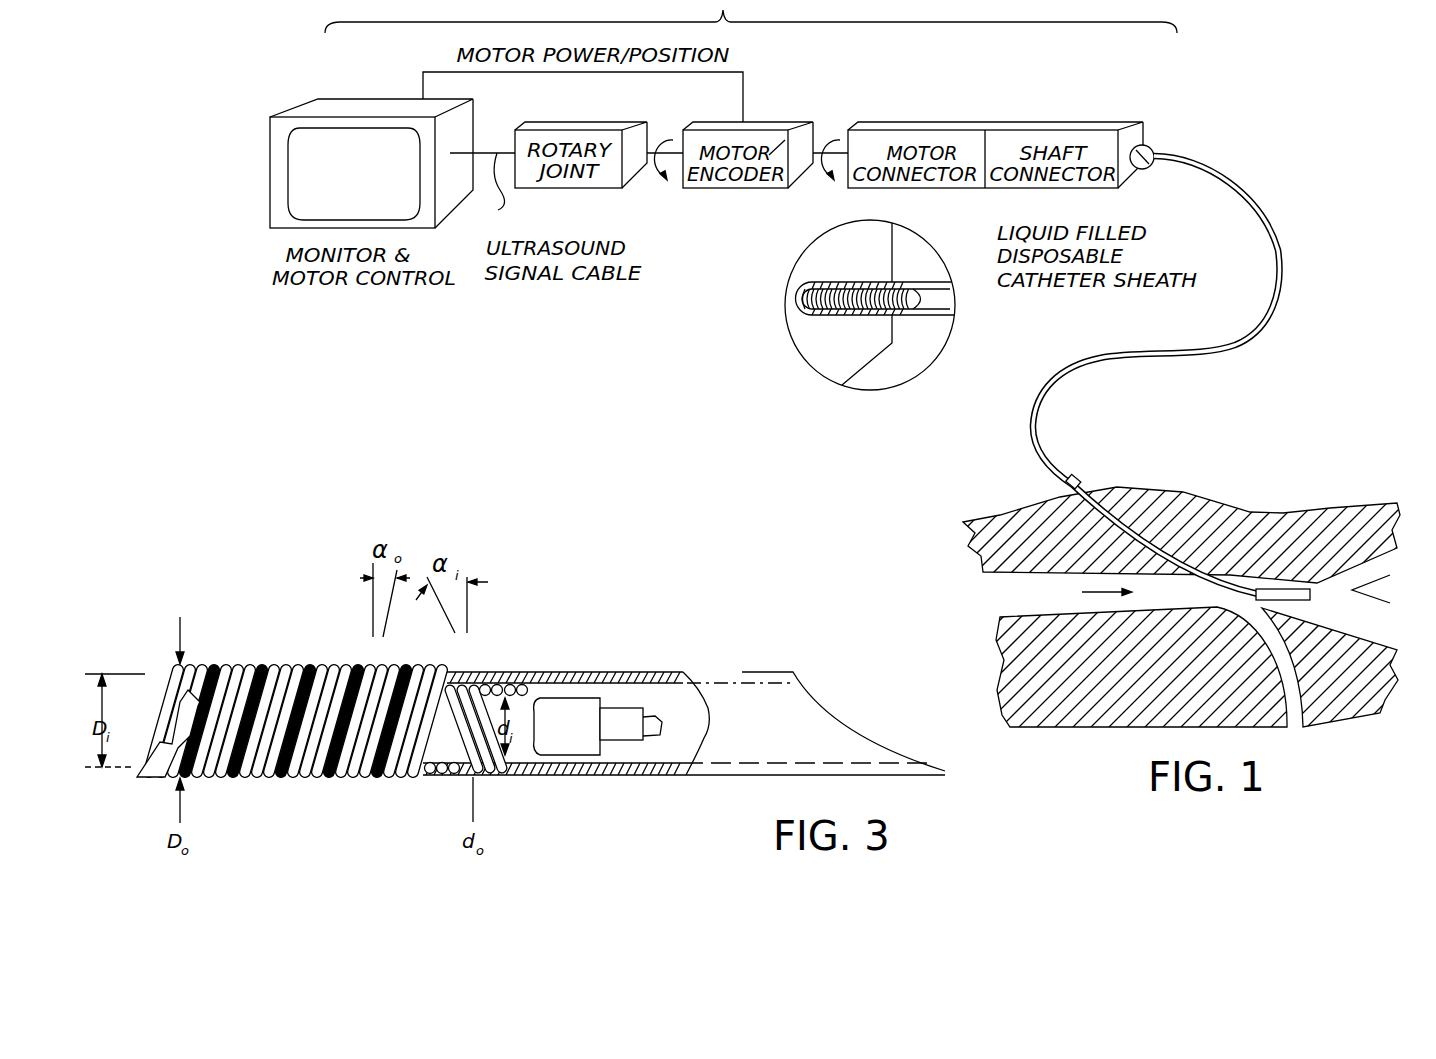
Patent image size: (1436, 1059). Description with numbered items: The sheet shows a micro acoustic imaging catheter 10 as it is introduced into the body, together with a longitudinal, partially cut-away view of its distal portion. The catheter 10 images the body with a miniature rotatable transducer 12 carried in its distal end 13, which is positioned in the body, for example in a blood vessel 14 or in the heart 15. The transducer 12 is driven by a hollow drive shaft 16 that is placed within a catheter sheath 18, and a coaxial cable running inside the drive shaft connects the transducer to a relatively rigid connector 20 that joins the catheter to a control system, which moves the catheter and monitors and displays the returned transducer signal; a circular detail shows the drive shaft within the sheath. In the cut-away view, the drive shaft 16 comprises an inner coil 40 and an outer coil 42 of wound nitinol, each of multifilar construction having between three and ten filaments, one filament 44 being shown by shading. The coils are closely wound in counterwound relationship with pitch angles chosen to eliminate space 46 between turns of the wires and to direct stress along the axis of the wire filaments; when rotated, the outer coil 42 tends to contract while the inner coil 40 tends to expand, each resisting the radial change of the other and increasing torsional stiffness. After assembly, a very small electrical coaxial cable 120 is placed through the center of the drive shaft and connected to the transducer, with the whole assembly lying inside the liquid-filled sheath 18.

In FIG. 1, the micro acoustic imaging catheter 10 is at (1022, 435).
In FIG. 1, the rotatable transducer 12 is at (1300, 588).
In FIG. 1, the distal end 13 is at (1092, 595).
In FIG. 1, the blood vessel 14 is at (998, 640).
In FIG. 1, the heart 15 is at (1343, 588).
In FIG. 1, the hollow drive shaft 16 is at (826, 335).
In FIG. 3, the hollow drive shaft 16 is at (289, 725).
In FIG. 1, the catheter sheath 18 is at (1272, 297).
In FIG. 3, the catheter sheath 18 is at (820, 735).
In FIG. 1, the connector 20 is at (1100, 124).
In FIG. 3, the inner coil 40 is at (483, 754).
In FIG. 3, the outer coil 42 is at (328, 697).
In FIG. 3, the filament 44 is at (212, 668).
In FIG. 3, the space between turns 46 is at (442, 774).
In FIG. 3, the electrical coaxial cable 120 is at (635, 755).